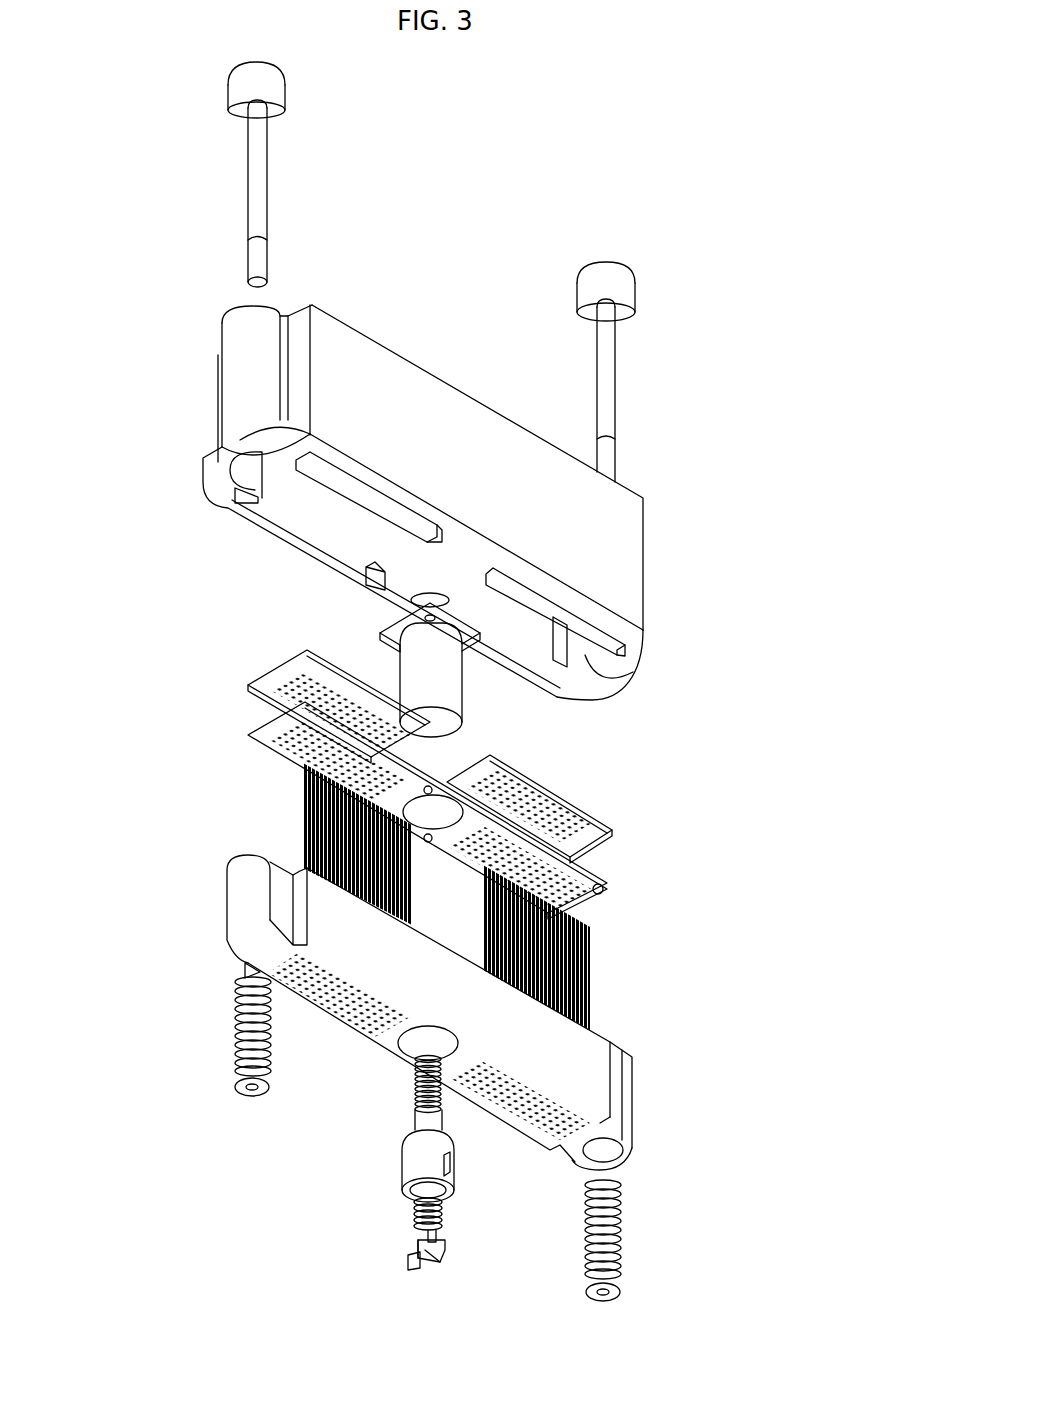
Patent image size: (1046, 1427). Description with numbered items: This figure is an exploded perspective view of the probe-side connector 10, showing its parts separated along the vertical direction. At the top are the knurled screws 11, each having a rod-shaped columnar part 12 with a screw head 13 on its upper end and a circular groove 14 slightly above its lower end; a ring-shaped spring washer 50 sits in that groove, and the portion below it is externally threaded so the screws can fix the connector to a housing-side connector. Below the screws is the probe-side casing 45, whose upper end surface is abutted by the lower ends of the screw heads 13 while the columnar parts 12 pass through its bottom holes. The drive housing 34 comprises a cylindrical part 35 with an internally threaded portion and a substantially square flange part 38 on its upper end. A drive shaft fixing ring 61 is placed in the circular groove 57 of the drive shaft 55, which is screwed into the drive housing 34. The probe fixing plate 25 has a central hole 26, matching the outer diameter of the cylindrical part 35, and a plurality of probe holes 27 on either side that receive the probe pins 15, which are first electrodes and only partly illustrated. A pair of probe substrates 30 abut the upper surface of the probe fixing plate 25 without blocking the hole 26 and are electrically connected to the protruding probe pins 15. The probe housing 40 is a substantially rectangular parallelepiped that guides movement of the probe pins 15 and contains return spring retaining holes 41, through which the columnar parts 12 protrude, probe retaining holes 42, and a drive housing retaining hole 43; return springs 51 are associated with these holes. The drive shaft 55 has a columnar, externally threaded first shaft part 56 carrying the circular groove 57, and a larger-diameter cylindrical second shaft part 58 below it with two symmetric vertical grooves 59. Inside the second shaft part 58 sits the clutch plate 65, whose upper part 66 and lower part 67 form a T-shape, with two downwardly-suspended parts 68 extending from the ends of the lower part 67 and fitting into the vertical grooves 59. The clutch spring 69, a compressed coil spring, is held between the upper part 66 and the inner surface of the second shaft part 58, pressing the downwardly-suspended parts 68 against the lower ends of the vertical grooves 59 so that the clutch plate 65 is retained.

The probe-side connector 10 is at (682, 100).
The knurled screw 11 is at (307, 170).
The columnar part 12 is at (268, 184).
The screw head 13 is at (286, 84).
The circular groove 14 is at (270, 238).
The probe pin 15 is at (592, 958).
The probe fixing plate 25 is at (605, 884).
The hole 26 is at (458, 810).
The probe hole 27 is at (502, 835).
The probe substrate 30 is at (586, 812).
The drive housing 34 is at (460, 704).
The cylindrical part 35 is at (403, 682).
The flange part 38 is at (380, 634).
The probe housing 40 is at (458, 1024).
The return spring retaining hole 41 is at (612, 1152).
The probe retaining hole 42 is at (540, 1133).
The drive housing retaining hole 43 is at (408, 1050).
The probe-side casing 45 is at (655, 548).
The spring washer 50 is at (236, 1090).
The return spring 51 is at (235, 1032).
The drive shaft 55 is at (433, 1175).
The first shaft part 56 is at (415, 1123).
The circular groove 57 is at (414, 1086).
The second shaft part 58 is at (405, 1173).
The vertical groove 59 is at (449, 1173).
The drive shaft fixing ring 61 is at (411, 603).
The clutch plate 65 is at (445, 1244).
The upper part 66 is at (418, 1246).
The lower part 67 is at (430, 1259).
The downwardly-suspended part 68 is at (412, 1264).
The clutch spring 69 is at (442, 1214).